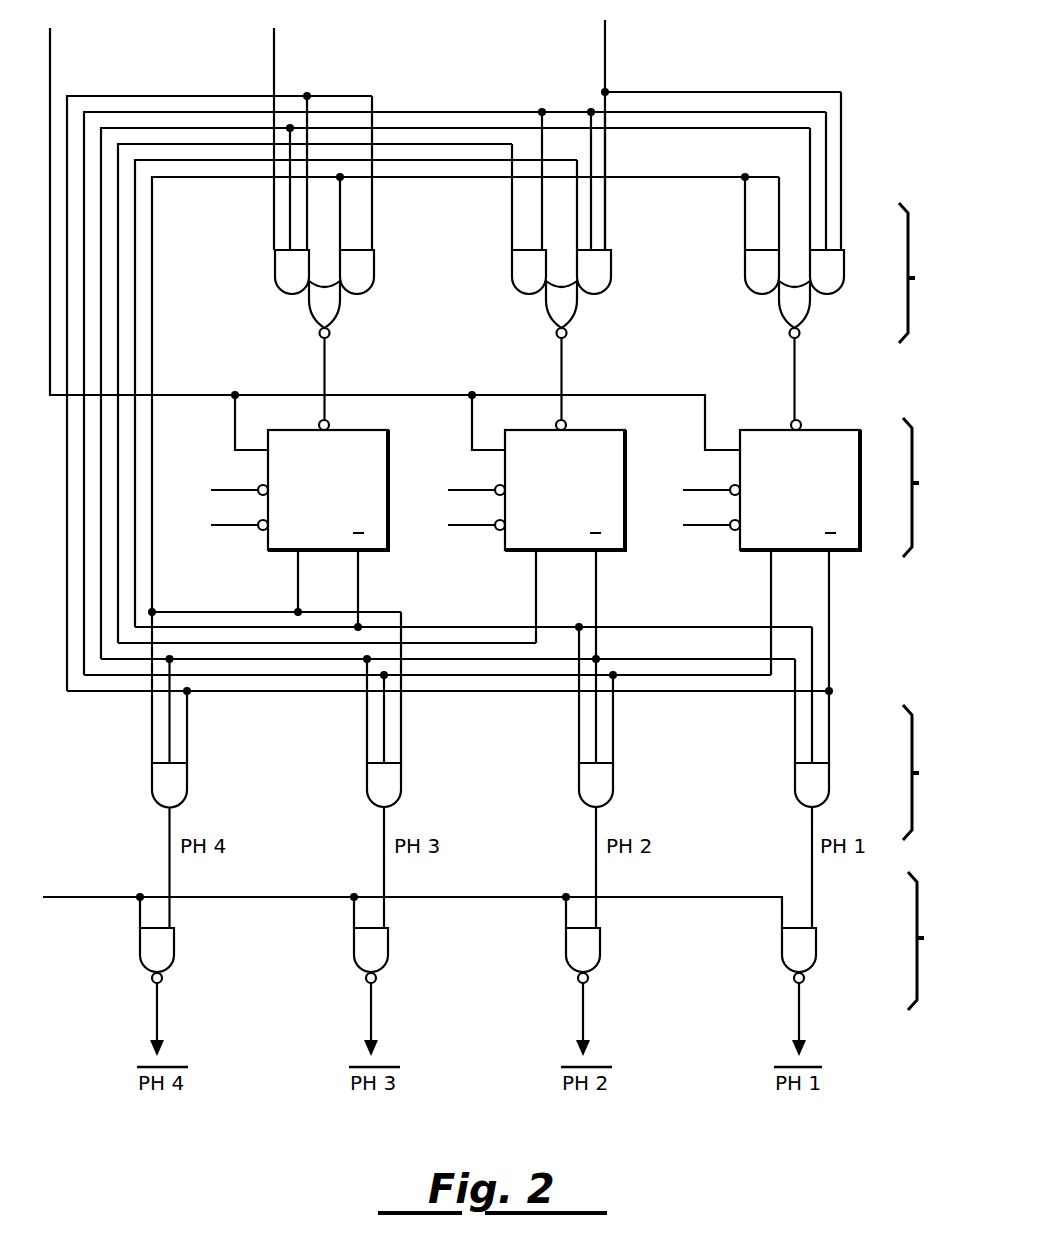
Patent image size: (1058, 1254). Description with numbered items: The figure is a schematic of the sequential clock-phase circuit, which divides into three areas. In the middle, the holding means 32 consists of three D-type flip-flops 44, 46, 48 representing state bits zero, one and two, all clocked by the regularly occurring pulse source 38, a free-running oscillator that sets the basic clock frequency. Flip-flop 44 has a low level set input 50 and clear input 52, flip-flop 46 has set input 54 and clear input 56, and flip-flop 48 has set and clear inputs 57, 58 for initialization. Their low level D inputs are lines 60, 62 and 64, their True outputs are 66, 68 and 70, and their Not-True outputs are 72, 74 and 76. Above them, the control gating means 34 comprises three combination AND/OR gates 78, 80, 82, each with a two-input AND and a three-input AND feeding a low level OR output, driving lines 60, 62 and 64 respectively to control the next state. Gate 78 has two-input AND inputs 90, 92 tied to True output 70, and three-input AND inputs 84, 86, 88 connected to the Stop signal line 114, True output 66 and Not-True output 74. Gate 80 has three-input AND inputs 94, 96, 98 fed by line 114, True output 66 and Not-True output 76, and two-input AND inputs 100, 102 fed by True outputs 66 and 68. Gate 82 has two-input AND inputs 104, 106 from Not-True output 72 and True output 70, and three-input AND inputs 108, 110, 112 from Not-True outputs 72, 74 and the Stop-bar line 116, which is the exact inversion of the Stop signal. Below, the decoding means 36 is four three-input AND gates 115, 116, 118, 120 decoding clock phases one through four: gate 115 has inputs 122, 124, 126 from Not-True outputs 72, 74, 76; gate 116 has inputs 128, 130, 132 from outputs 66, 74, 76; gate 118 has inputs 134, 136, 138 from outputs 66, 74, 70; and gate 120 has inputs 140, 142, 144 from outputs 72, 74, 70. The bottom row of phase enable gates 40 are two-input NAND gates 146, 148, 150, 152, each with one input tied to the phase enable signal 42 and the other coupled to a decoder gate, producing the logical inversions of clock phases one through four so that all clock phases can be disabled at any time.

The source of regularly occurring pulses 38 is at (50, 50).
The Stop-bar signal line 116 is at (276, 50).
The Stop signal line 114 is at (606, 50).
The input of three-input AND of gate 82 112 is at (274, 196).
The input of three-input AND of gate 82 110 is at (289, 222).
The input of three-input AND of gate 82 108 is at (306, 244).
The input of two-input AND of gate 82 106 is at (373, 216).
The input of two-input AND of gate 82 104 is at (373, 242).
The input of two-input AND of gate 80 102 is at (511, 216).
The input of two-input AND of gate 80 100 is at (541, 242).
The input of three-input AND of gate 80 98 is at (605, 196).
The input of three-input AND of gate 80 96 is at (592, 222).
The input of three-input AND of gate 80 94 is at (578, 246).
The input of two-input AND of gate 78 92 is at (745, 216).
The input of two-input AND of gate 78 90 is at (778, 242).
The input of three-input AND of gate 78 88 is at (841, 196).
The input of three-input AND of gate 78 86 is at (827, 222).
The input of three-input AND of gate 78 84 is at (811, 246).
The combination AND/OR gate 82 is at (292, 318).
The combination AND/OR gate 80 is at (528, 318).
The combination AND/OR gate 78 is at (763, 318).
The D input line of flip-flop 48 64 is at (326, 364).
The D input line of flip-flop 46 62 is at (562, 364).
The D input line of flip-flop 44 60 is at (796, 364).
The control gating means 34 is at (926, 273).
The D-type flip-flop 48 is at (352, 430).
The D-type flip-flop 46 is at (589, 430).
The D-type flip-flop 44 is at (826, 430).
The state flip-flops 32 is at (931, 487).
The set input 57 is at (211, 490).
The low level clear input line 58 is at (211, 525).
The low level set input line 54 is at (448, 490).
The low level clear input line 56 is at (448, 525).
The low level set input line 50 is at (683, 490).
The low level clear input line 52 is at (683, 525).
The True output of flip-flop 48 70 is at (298, 560).
The Not-True output of flip-flop 48 76 is at (359, 560).
The True output of flip-flop 46 68 is at (536, 560).
The Not-True output of flip-flop 46 74 is at (596, 560).
The True output of flip-flop 44 66 is at (771, 560).
The Not-True output of flip-flop 44 72 is at (829, 560).
The input of AND gate 120 144 is at (153, 716).
The input of AND gate 120 142 is at (170, 742).
The input of AND gate 120 140 is at (188, 762).
The input of AND gate 118 138 is at (368, 716).
The input of AND gate 118 136 is at (385, 742).
The input of AND gate 118 134 is at (402, 762).
The input of AND gate 116 132 is at (580, 716).
The input of AND gate 116 130 is at (597, 742).
The input of AND gate 116 128 is at (614, 762).
The input of AND gate 115 126 is at (796, 716).
The input of AND gate 115 124 is at (813, 742).
The input of AND gate 115 122 is at (830, 762).
The decoding means 36 is at (931, 772).
The three-input AND gate 120 is at (153, 800).
The three-input AND gate 118 is at (368, 800).
The three-input AND gate 115 is at (796, 800).
The phase enable signal 42 is at (99, 899).
The phase enable gates 40 is at (937, 941).
The two-input NAND gate 152 is at (141, 960).
The two-input NAND gate 150 is at (355, 960).
The two-input NAND gate 148 is at (567, 960).
The two-input NAND gate 146 is at (783, 960).